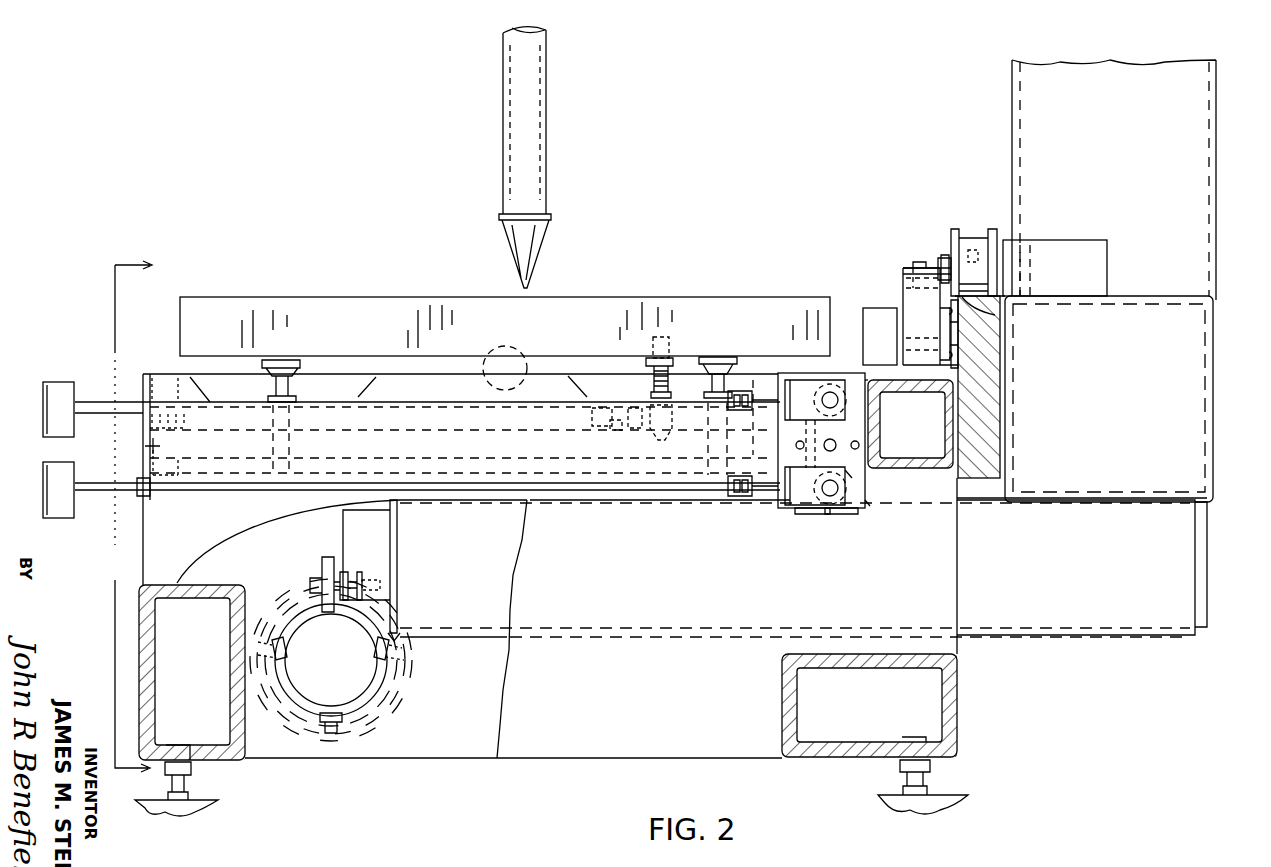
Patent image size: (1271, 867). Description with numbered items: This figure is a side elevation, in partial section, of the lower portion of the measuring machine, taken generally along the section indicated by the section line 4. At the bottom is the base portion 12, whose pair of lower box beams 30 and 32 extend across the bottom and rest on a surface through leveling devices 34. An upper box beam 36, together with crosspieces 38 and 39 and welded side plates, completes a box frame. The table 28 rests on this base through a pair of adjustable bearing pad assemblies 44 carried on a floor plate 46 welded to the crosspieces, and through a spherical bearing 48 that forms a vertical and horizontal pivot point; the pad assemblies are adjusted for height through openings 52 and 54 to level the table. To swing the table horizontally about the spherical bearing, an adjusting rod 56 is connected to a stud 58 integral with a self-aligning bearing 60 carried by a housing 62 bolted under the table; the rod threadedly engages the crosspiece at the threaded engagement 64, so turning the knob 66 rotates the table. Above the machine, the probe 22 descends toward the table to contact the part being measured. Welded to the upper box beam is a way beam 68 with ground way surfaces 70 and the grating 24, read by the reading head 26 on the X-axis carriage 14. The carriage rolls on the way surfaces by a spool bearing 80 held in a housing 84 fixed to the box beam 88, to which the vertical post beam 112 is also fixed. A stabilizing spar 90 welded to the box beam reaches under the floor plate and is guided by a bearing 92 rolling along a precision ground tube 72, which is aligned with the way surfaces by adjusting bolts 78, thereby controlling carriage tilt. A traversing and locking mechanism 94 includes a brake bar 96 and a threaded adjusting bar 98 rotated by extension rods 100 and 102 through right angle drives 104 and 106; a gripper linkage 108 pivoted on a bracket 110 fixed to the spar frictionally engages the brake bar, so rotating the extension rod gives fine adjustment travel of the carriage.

The section line 4- 4 is at (133, 518).
The base portion 12 is at (972, 709).
The X-axis carriage 14 is at (1222, 364).
The probe 22 is at (561, 153).
The grating 24 is at (962, 338).
The reading head 26 is at (875, 308).
The table 28 is at (200, 285).
The lower box beam 30 is at (150, 648).
The lower box beam 32 is at (782, 698).
The leveling devices 34 is at (184, 780).
The upper box beam 36 is at (912, 390).
The crosspiece 38 is at (165, 370).
The crosspiece 39 is at (790, 392).
The adjustable bearing pad assemblies 44 is at (292, 362).
The floor plate 46 is at (655, 478).
The spherical bearing 48 is at (520, 360).
The opening 52 is at (256, 393).
The opening 54 is at (632, 393).
The adjusting rod 56 is at (88, 418).
The stud 58 is at (626, 430).
The self-aligning bearing 60 is at (672, 428).
The housing 62 is at (670, 386).
The threaded engagement 64 is at (138, 446).
The knob 66 is at (42, 452).
The way beam 68 is at (985, 434).
The way surfaces 70 is at (990, 300).
The precision ground tube 72 is at (322, 614).
The adjusting bolts 78 is at (275, 612).
The spool bearing 80 is at (962, 236).
The housing 84 is at (1080, 238).
The box beam 88 is at (1212, 420).
The stabilizing spar 90 is at (448, 640).
The bearing 92 is at (328, 560).
The traversing and locking mechanism 94 is at (866, 390).
The brake bar 96 is at (866, 350).
The threaded adjusting bar 98 is at (825, 512).
The extension rod 100 is at (118, 392).
The extension rod 102 is at (90, 495).
The right angle drive 104 is at (790, 508).
The right angle drive 106 is at (841, 404).
The gripper linkage 108 is at (852, 470).
The bracket 110 is at (865, 500).
The vertical post beam 112 is at (1010, 146).